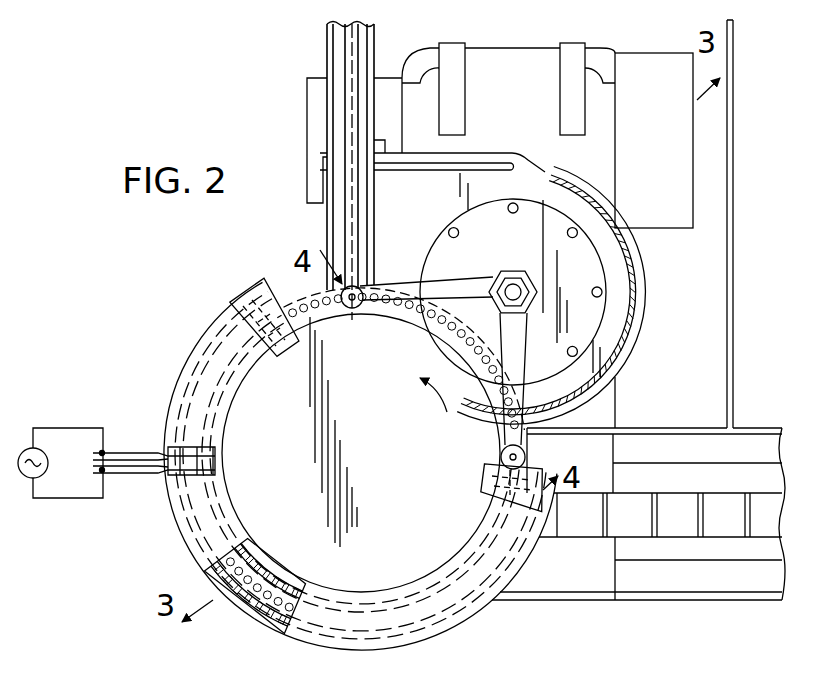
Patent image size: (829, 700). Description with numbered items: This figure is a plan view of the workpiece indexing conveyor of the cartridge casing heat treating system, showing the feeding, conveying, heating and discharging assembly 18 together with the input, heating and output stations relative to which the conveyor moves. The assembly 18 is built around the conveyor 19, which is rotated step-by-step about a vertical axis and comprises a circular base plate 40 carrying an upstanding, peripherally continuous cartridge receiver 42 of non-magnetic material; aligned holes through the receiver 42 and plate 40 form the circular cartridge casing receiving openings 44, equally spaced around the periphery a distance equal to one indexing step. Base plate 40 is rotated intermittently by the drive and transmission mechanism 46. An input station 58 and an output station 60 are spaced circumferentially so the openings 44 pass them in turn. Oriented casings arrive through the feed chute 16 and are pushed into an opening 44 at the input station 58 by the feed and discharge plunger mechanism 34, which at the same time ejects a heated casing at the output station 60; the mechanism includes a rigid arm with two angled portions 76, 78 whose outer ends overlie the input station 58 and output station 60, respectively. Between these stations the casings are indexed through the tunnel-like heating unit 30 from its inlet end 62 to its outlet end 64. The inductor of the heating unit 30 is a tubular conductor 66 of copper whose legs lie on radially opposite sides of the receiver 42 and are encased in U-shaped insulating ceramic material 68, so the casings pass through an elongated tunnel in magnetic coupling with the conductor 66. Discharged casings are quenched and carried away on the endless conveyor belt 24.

The feed chute 16 is at (330, 176).
The feeding, conveying, heating and discharging assembly 18 is at (183, 272).
The conveyor 19 is at (292, 290).
The endless conveyor belt 24 is at (667, 527).
The heating unit 30 is at (175, 533).
The feed and discharge plunger mechanism 34 is at (565, 278).
The base plate 40 is at (257, 390).
The cartridge receiver 42 is at (273, 283).
The cartridge casing receiving openings 44 is at (300, 310).
The drive and transmission mechanism 46 is at (708, 145).
The input station 58 is at (382, 268).
The output station 60 is at (537, 458).
The inlet end 62 is at (257, 290).
The outlet end 64 is at (557, 507).
The tubular conductor 66 is at (238, 610).
The insulating ceramic material 68 is at (278, 633).
The arm portion 76 is at (445, 288).
The arm portion 78 is at (560, 397).